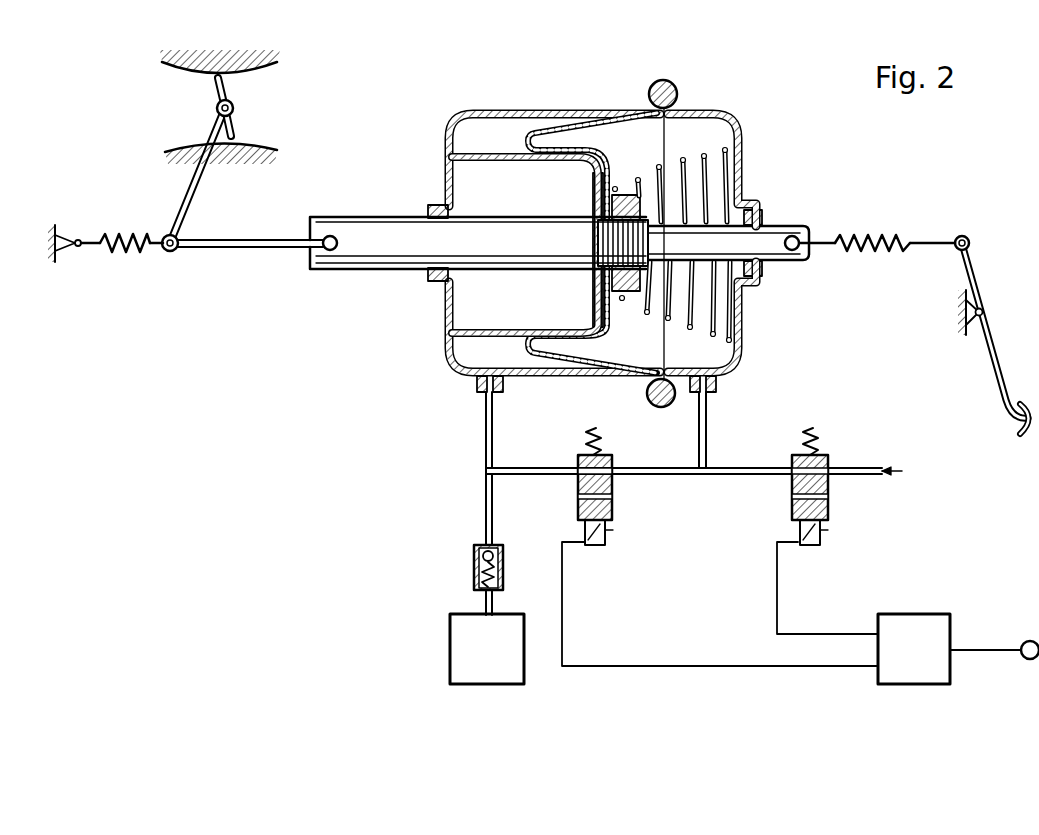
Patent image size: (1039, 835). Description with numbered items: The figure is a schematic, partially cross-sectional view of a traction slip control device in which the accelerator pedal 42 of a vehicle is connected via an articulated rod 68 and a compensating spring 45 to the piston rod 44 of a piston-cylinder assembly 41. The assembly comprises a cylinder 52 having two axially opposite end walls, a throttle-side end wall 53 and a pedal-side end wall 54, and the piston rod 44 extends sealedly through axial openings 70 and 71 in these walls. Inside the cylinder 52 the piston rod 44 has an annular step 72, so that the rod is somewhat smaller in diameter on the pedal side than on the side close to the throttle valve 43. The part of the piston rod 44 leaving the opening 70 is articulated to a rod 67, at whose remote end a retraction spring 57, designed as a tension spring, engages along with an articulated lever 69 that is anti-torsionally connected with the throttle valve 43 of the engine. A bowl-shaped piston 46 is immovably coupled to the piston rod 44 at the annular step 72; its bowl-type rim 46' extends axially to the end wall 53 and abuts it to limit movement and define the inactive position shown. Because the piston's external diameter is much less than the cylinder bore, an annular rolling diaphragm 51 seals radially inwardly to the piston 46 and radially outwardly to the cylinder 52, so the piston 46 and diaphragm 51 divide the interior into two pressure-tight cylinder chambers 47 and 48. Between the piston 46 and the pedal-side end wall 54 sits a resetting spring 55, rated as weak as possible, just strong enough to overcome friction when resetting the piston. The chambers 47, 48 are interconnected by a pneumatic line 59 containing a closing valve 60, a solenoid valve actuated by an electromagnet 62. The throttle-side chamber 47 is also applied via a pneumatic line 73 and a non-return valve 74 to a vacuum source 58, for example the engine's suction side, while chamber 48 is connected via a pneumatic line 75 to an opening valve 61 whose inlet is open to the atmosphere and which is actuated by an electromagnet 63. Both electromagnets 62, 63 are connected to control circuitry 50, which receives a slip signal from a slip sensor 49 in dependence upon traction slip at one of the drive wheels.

The piston-cylinder assembly 41 is at (622, 112).
The accelerator pedal 42 is at (1008, 405).
The throttle valve 43 is at (215, 96).
The piston rod 44 is at (776, 250).
The compensating spring 45 is at (880, 240).
The bowl-shaped piston 46 is at (592, 334).
The bowl-type rim 46' is at (517, 191).
The cylinder chamber 47 is at (520, 176).
The cylinder chamber 48 is at (686, 142).
The slip sensor 49 is at (1024, 642).
The control circuitry 50 is at (913, 620).
The annular rolling diaphragm 51 is at (568, 126).
The cylinder 52 is at (533, 112).
The throttle-side end wall 53 is at (445, 170).
The pedal-side end wall 54 is at (744, 156).
The resetting spring 55 is at (726, 152).
The retraction spring 57 is at (106, 243).
The vacuum source 58 is at (456, 647).
The pneumatic line 59 is at (494, 448).
The closing valve 60 is at (614, 490).
The opening valve 61 is at (794, 490).
The electromagnet 62 is at (592, 546).
The electromagnet 63 is at (808, 546).
The rod 67 is at (249, 240).
The articulated rod 68 is at (946, 240).
The articulated lever 69 is at (185, 200).
The axial opening 70 is at (428, 224).
The axial opening 71 is at (766, 223).
The annular step 72 is at (604, 236).
The pneumatic line 73 is at (485, 504).
The non-return valve 74 is at (473, 566).
The pneumatic line 75 is at (752, 467).